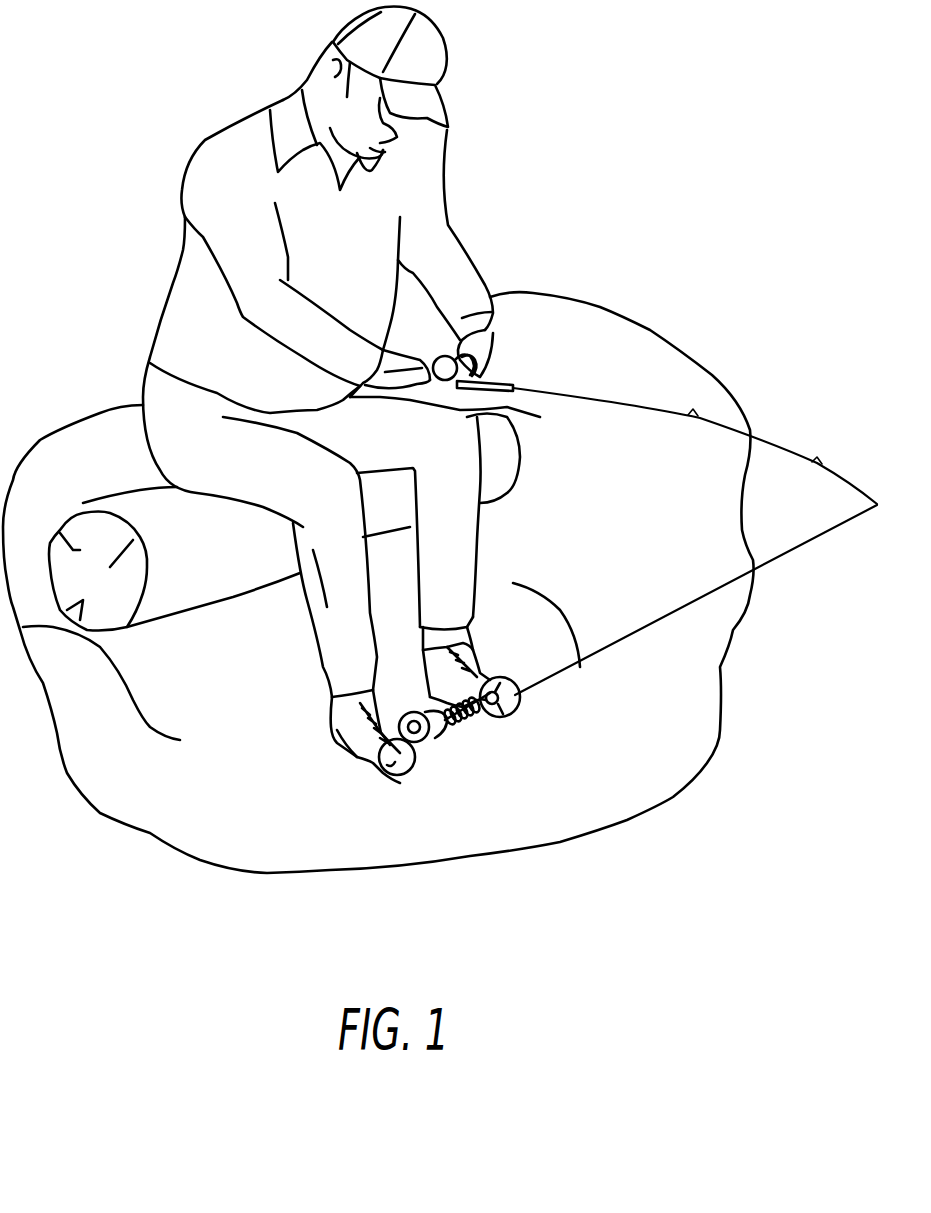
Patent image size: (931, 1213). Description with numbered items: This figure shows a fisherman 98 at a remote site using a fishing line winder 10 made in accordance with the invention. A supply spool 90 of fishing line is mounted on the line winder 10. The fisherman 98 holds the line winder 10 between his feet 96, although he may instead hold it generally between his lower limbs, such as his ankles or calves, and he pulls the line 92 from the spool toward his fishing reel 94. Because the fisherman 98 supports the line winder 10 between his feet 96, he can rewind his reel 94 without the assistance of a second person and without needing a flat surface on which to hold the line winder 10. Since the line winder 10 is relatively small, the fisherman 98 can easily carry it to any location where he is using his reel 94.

The fishing line winder 10 is at (433, 733).
The supply spool 90 is at (423, 783).
The line 92 is at (703, 597).
The fishing reel 94 is at (500, 404).
The feet 96 is at (513, 697).
The fisherman 98 is at (492, 222).